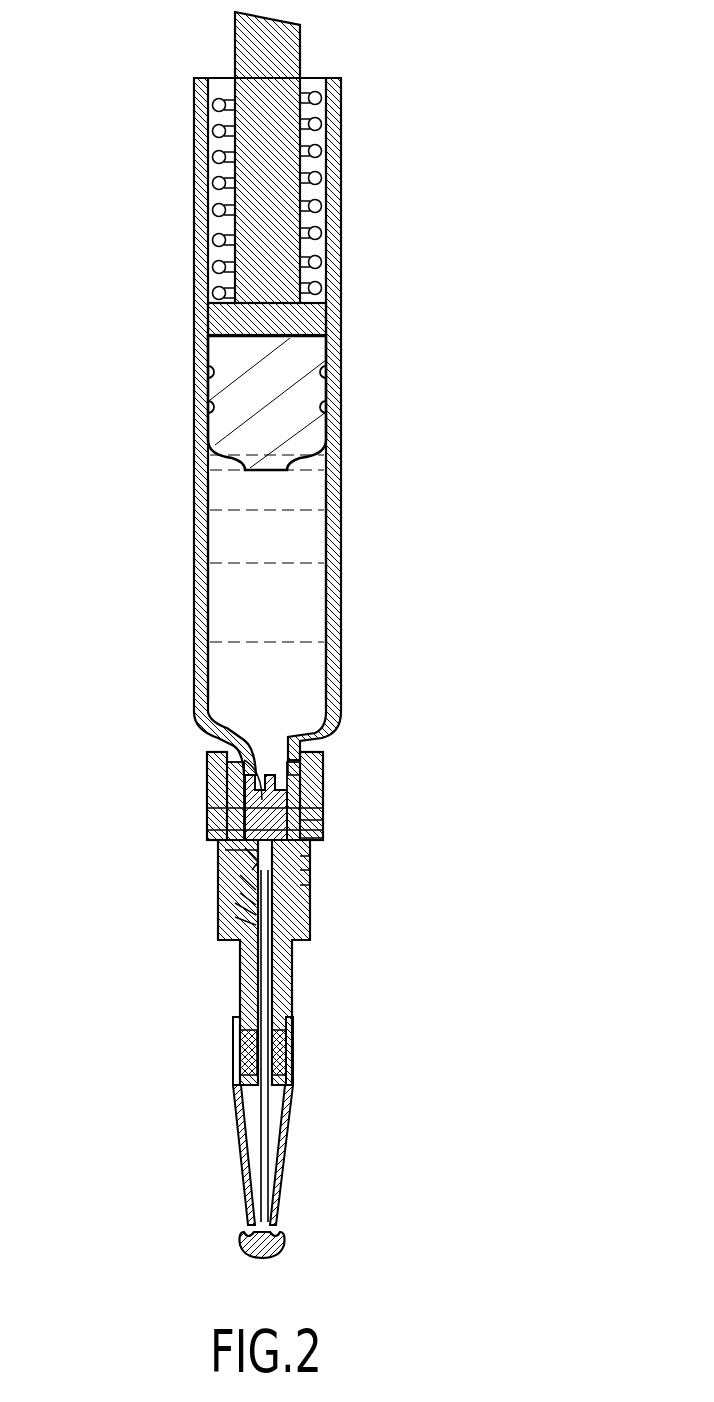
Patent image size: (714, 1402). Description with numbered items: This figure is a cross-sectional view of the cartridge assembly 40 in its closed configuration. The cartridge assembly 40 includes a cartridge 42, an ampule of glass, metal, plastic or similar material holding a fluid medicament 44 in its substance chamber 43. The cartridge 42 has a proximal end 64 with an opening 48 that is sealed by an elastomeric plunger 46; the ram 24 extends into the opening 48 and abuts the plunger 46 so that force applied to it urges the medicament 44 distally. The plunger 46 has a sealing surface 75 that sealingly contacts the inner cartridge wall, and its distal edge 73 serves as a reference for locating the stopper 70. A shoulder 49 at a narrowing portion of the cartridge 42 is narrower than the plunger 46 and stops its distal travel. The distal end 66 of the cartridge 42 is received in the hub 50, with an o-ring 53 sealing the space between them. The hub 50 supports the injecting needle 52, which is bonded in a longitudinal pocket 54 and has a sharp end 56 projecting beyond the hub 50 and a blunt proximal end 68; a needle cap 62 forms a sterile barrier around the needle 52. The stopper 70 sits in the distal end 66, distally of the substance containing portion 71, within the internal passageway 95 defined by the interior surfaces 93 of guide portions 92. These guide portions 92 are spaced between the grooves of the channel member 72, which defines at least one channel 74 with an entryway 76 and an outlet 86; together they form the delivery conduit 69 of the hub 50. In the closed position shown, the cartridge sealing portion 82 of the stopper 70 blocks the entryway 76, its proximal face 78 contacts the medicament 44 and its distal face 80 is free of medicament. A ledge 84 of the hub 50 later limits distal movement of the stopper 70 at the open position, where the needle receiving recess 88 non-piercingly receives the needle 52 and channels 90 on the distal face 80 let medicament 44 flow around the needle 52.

The ram 24 is at (250, 170).
The cartridge assembly 40 is at (392, 486).
The cartridge 42 is at (197, 647).
The substance chamber 43 is at (320, 578).
The medicament 44 is at (217, 593).
The plunger 46 is at (300, 352).
The opening 48 is at (315, 86).
The shoulder 49 is at (345, 735).
The hub 50 is at (312, 947).
The injecting needle 52 is at (270, 1092).
The o-ring 53 is at (322, 795).
The longitudinal pocket 54 is at (295, 1038).
The sharp end 56 is at (258, 1135).
The needle cap 62 is at (275, 1248).
The proximal end 64 is at (201, 118).
The distal end 66 is at (322, 768).
The proximal end of the needle 68 is at (235, 917).
The delivery conduit 69 is at (225, 850).
The stopper 70 is at (210, 780).
The substance containing portion 71 is at (214, 556).
The channel member 72 is at (312, 870).
The distal edge 73 is at (325, 425).
The channel 74 is at (203, 830).
The sealing surface 75 is at (217, 437).
The entryway 76 is at (318, 822).
The proximal face 78 is at (193, 716).
The distal face 80 is at (315, 885).
The cartridge sealing portion 82 is at (205, 807).
The ledge 84 is at (238, 890).
The outlet 86 is at (300, 935).
The needle receiving recess 88 is at (235, 883).
The channels 90 is at (312, 838).
The guide portions 92 is at (312, 856).
The interior surfaces 93 is at (237, 850).
The internal passageway 95 is at (233, 903).